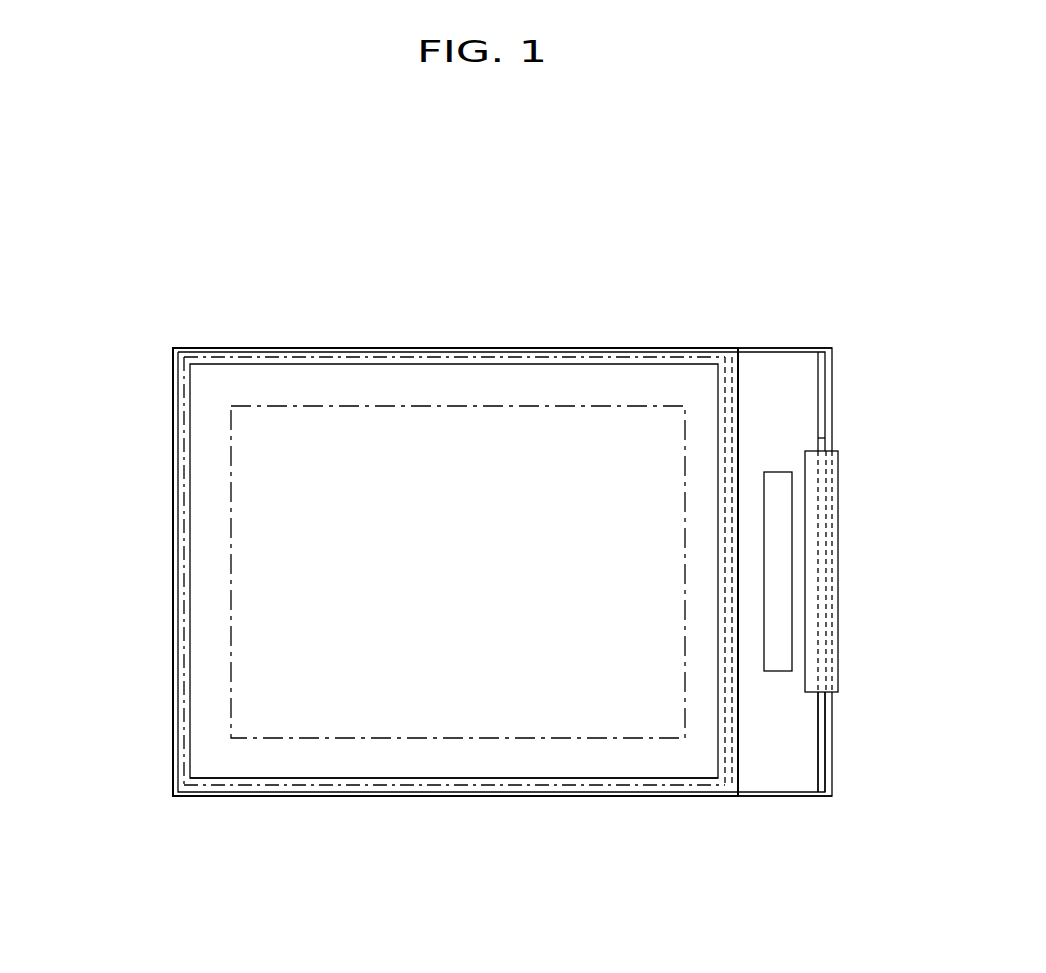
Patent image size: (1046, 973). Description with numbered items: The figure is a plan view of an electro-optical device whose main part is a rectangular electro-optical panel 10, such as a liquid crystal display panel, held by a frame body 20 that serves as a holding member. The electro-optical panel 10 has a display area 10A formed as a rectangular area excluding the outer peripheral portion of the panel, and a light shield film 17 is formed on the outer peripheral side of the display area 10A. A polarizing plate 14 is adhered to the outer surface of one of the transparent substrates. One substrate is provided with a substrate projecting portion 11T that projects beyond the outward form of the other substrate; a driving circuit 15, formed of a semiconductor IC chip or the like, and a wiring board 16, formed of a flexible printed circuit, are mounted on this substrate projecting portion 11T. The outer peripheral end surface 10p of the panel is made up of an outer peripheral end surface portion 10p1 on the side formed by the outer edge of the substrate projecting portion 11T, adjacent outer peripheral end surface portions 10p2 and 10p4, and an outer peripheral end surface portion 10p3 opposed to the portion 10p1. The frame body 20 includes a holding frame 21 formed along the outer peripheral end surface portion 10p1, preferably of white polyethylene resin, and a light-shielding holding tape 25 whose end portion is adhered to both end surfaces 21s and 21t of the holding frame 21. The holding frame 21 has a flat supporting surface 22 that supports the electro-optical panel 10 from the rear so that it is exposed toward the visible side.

The electro-optical panel 10 is at (636, 347).
The outer peripheral end surface 10p is at (172, 545).
The outer peripheral end surface portion 10p1 is at (818, 425).
The outer peripheral end surface portion 10p2 is at (534, 349).
The outer peripheral end surface portion 10p3 is at (176, 440).
The outer peripheral end surface portion 10p4 is at (403, 796).
The display area 10A is at (290, 738).
The light shield film 17 is at (378, 378).
The supporting surface 22 is at (722, 451).
The light-shielding holding tape 25 is at (176, 608).
The polarizing plate 14 is at (582, 785).
The frame body 20 is at (838, 383).
The holding frame 21 is at (828, 731).
The end surface of holding frame 21s is at (795, 349).
The end surface of holding frame 21t is at (775, 797).
The substrate projecting portion 11T is at (802, 773).
The driving circuit 15 is at (785, 535).
The wiring board 16 is at (835, 616).